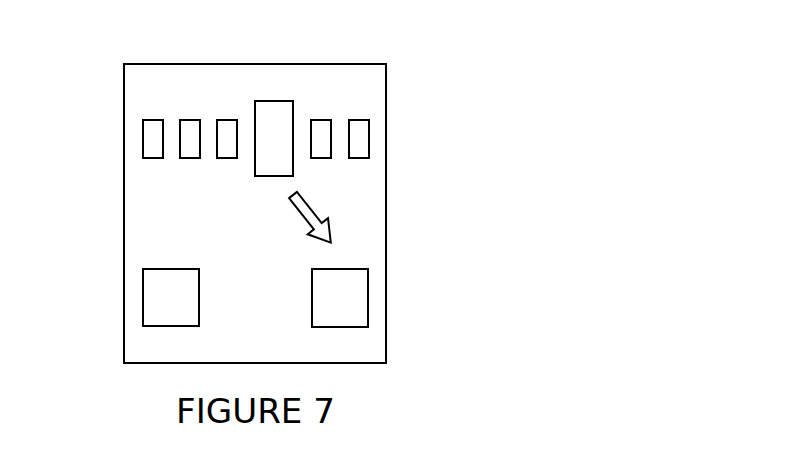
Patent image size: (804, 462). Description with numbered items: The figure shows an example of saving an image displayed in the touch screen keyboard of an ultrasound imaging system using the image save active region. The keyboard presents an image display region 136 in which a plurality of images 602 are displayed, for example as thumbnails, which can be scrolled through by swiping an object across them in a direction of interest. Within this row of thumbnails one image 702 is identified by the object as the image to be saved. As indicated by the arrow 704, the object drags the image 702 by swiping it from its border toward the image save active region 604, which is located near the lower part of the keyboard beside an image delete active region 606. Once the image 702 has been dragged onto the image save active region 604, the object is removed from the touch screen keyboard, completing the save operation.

The plurality of images 602 is at (366, 87).
The image display region 136 is at (124, 213).
The image 702 is at (270, 177).
The arrow 704 is at (298, 217).
The image delete active region 606 is at (143, 298).
The image save active region 604 is at (368, 297).